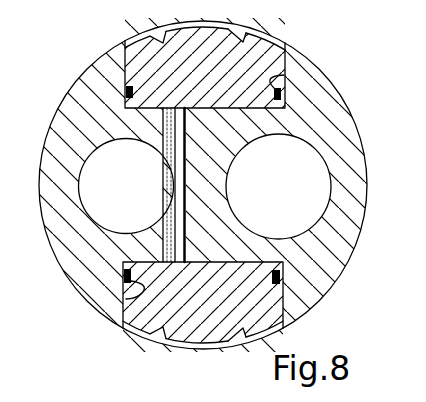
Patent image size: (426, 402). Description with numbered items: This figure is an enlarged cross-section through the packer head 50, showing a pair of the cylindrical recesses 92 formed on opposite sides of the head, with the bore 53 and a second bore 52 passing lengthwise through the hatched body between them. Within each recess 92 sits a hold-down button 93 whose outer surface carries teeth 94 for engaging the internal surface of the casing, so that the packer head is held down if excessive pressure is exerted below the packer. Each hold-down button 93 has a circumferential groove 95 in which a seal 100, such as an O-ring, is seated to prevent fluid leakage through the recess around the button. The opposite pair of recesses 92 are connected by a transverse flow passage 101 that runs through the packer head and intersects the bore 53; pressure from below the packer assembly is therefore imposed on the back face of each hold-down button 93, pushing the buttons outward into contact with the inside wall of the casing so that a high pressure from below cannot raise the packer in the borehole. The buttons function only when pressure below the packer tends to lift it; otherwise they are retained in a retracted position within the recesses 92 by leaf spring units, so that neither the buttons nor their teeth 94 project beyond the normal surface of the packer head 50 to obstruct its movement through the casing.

The body 50 is at (190, 185).
The right bore 52 is at (331, 167).
The bore 53 is at (86, 200).
The cylindrical recess 92 is at (285, 306).
The hold-down button 93 is at (208, 336).
The teeth 94 is at (163, 336).
The circumferential groove 95 is at (126, 299).
The seal 100 is at (128, 279).
The transverse flow passage 101 is at (172, 236).